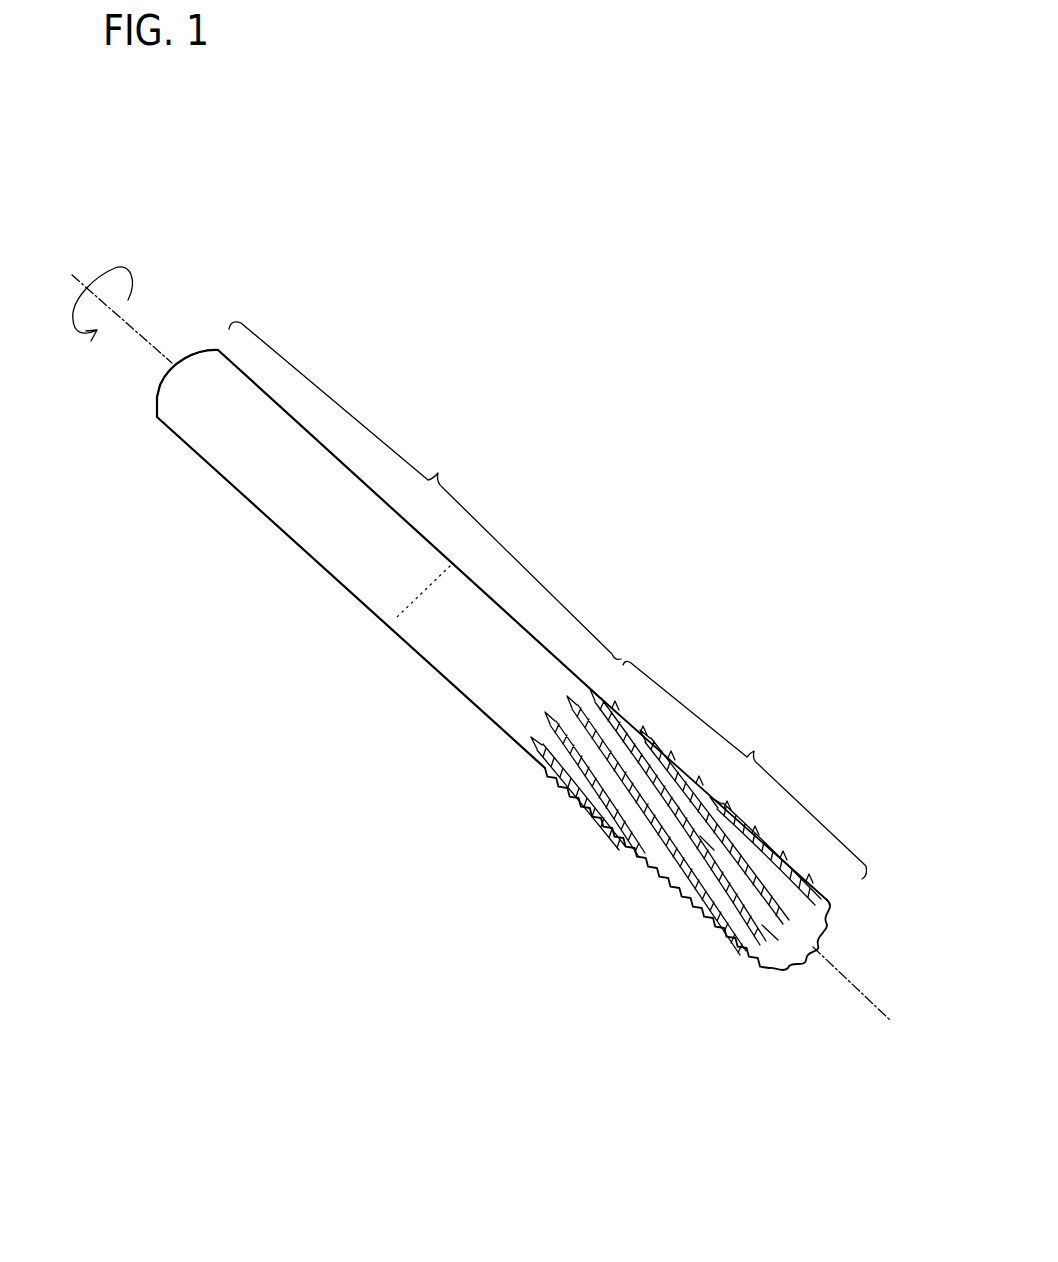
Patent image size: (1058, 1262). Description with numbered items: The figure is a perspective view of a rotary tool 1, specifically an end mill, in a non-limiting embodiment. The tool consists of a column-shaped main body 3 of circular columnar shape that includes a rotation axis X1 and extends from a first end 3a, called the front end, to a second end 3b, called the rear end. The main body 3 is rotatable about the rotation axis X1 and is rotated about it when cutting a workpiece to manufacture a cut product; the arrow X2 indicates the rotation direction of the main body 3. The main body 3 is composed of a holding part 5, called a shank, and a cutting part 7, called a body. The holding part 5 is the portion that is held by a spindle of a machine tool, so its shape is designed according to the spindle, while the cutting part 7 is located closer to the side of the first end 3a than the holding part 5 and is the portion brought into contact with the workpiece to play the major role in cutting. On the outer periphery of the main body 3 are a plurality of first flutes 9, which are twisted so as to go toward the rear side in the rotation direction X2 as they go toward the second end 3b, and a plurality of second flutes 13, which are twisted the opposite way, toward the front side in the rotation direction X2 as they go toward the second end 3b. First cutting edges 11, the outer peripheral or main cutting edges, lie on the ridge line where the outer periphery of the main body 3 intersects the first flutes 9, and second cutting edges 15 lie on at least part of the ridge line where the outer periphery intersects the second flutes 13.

The rotary tool 1 is at (390, 292).
The main body 3 is at (544, 658).
The first end 3a is at (793, 927).
The second end 3b is at (172, 363).
The holding part 5 is at (425, 491).
The cutting part 7 is at (671, 852).
The first flutes 9 is at (609, 763).
The first cutting edges 11 is at (598, 787).
The second flutes 13 is at (587, 807).
The second cutting edges 15 is at (707, 843).
The rotation axis X1 is at (478, 654).
The rotation direction X2 is at (74, 321).